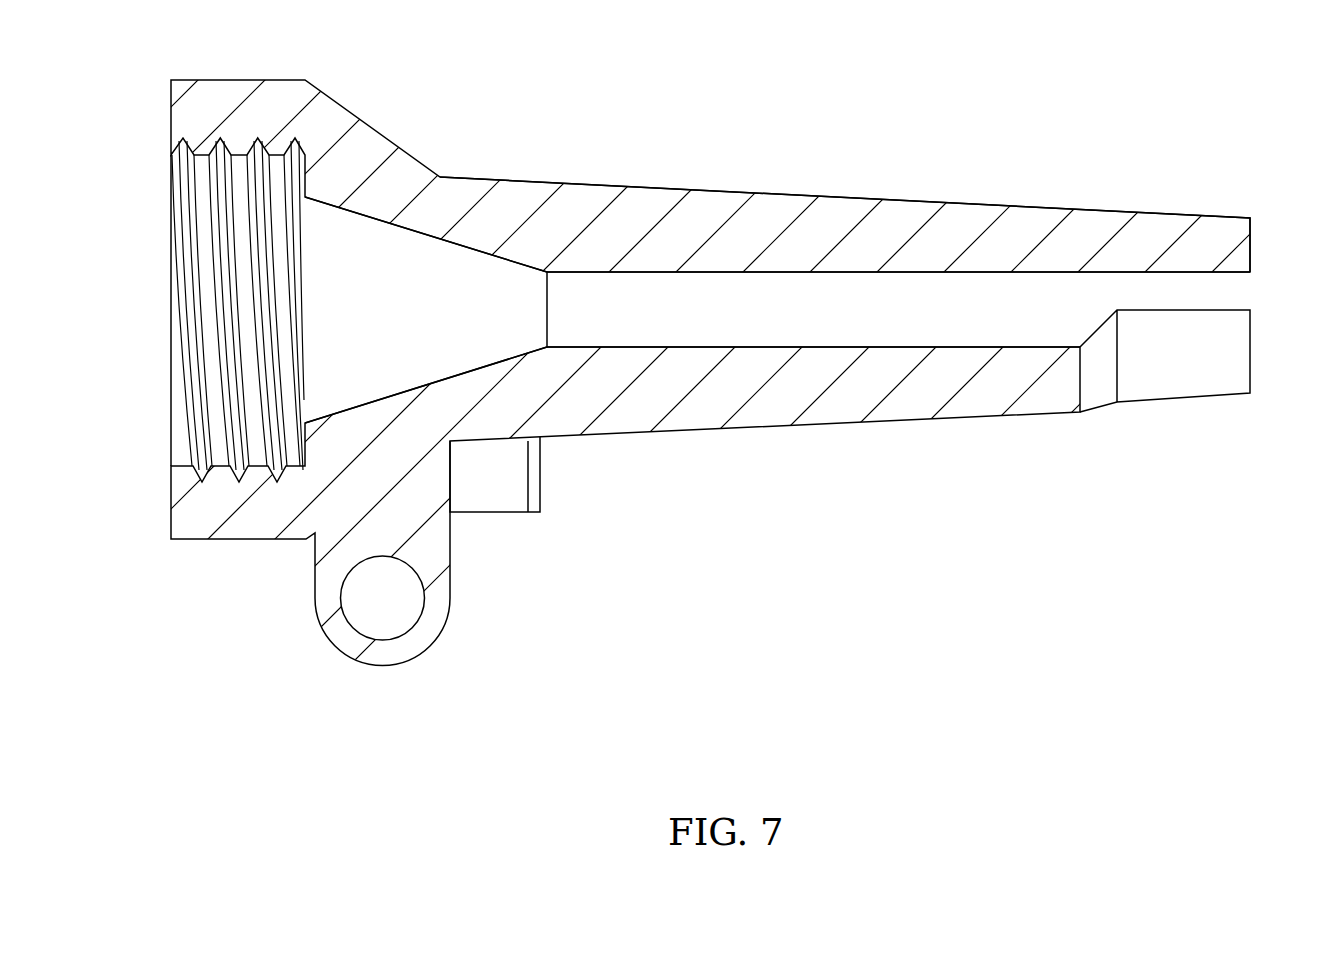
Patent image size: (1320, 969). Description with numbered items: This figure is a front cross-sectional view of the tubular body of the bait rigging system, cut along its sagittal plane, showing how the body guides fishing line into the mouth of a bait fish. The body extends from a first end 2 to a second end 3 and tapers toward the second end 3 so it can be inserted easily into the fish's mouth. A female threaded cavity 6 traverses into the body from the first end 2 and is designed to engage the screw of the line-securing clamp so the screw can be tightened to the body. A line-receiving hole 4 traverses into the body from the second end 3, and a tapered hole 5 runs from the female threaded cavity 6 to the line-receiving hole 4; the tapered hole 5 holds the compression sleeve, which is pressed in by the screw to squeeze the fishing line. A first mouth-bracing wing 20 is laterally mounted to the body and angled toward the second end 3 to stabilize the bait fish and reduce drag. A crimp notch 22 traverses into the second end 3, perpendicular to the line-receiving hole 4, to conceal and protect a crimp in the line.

The first end 2 is at (168, 525).
The second end 3 is at (1256, 242).
The line-receiving hole 4 is at (1244, 289).
The tapered hole 5 is at (534, 335).
The female threaded cavity 6 is at (184, 270).
The first mouth-bracing wing 20 is at (535, 479).
The crimp notch 22 is at (1147, 392).